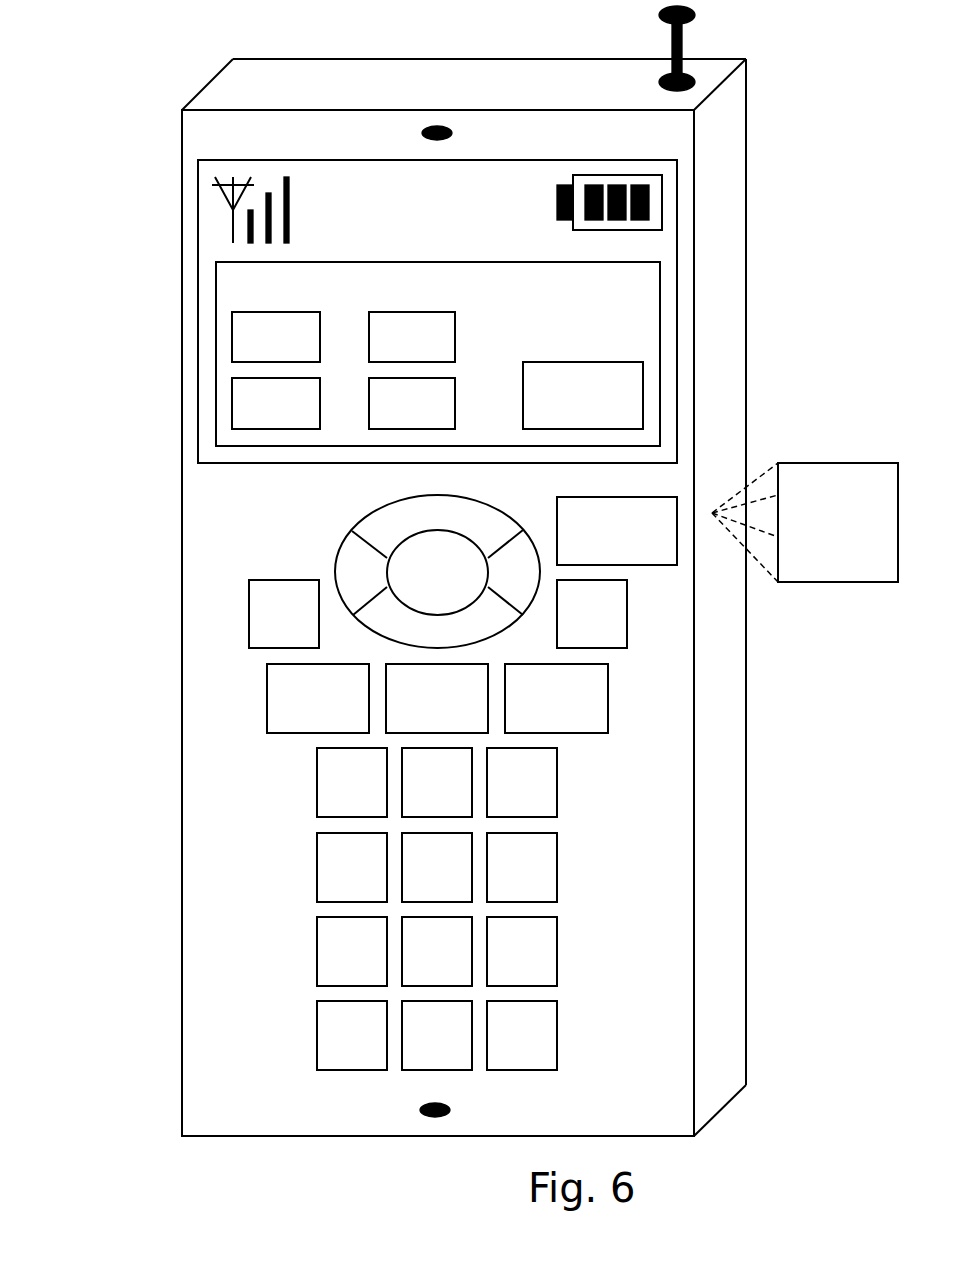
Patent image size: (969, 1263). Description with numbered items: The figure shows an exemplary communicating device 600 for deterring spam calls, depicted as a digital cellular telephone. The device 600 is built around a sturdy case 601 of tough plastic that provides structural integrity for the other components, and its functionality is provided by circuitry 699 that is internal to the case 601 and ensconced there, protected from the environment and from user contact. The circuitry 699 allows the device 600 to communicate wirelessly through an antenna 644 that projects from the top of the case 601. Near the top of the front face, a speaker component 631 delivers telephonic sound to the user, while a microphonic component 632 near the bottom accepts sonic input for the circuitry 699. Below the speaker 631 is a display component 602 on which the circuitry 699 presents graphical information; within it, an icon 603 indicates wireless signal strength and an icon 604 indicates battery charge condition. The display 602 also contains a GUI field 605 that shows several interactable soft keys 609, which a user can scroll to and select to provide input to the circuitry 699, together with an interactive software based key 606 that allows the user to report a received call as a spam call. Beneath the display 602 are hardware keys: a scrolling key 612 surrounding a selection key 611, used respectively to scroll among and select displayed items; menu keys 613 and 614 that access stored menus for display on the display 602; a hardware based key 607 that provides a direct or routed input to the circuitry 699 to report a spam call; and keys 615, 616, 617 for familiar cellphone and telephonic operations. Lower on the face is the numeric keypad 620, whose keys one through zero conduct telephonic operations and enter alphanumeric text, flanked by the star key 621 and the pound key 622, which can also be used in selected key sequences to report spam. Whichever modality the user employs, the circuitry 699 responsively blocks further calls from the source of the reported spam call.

The communicating device 600 is at (469, 571).
The case 601 is at (181, 127).
The display component 602 is at (437, 311).
The signal strength icon 603 is at (273, 210).
The battery charge icon 604 is at (583, 202).
The GUI field 605 is at (438, 354).
The interactive software based key 606 is at (583, 395).
The hardware based key 607 is at (617, 531).
The interactable soft key 609 is at (343, 370).
The selection key 611 is at (437, 572).
The scrolling key 612 is at (437, 571).
The menu key 613 is at (284, 614).
The menu key 614 is at (592, 614).
The telephonic operation key 615 is at (318, 698).
The telephonic operation key 616 is at (437, 698).
The telephonic operation key 617 is at (556, 698).
The numeric keys 620 is at (300, 1001).
The star key 621 is at (352, 1035).
The pound key 622 is at (522, 1035).
The speaker component 631 is at (456, 133).
The microphonic component 632 is at (454, 1110).
The antenna 644 is at (692, 48).
The circuitry 699 is at (805, 522).